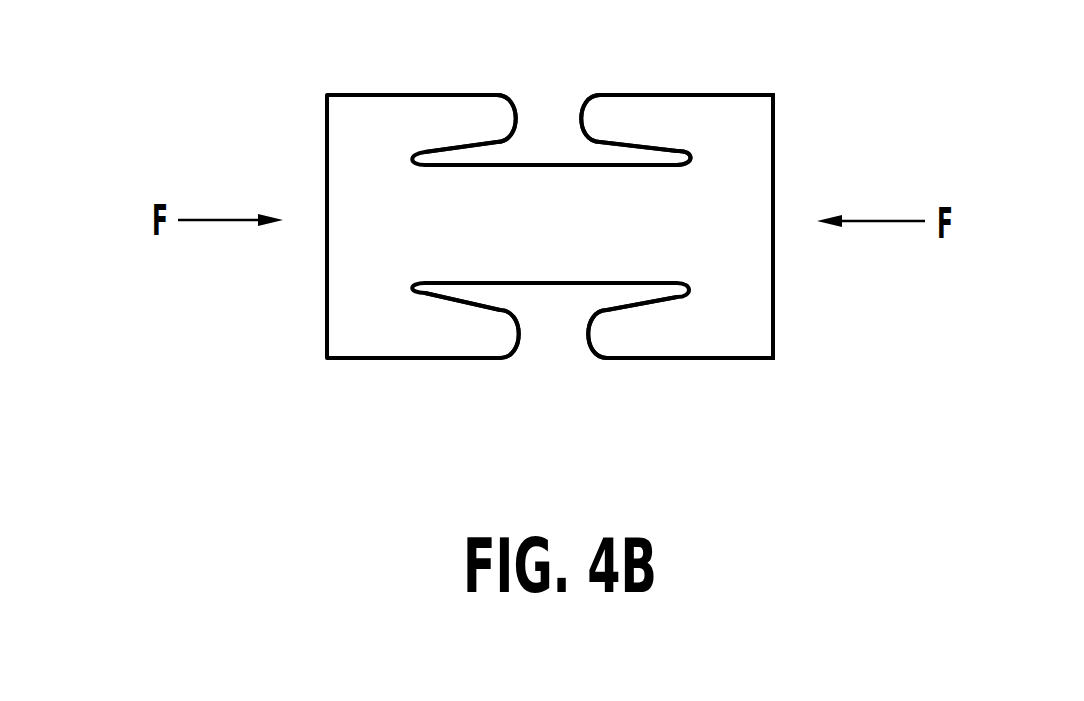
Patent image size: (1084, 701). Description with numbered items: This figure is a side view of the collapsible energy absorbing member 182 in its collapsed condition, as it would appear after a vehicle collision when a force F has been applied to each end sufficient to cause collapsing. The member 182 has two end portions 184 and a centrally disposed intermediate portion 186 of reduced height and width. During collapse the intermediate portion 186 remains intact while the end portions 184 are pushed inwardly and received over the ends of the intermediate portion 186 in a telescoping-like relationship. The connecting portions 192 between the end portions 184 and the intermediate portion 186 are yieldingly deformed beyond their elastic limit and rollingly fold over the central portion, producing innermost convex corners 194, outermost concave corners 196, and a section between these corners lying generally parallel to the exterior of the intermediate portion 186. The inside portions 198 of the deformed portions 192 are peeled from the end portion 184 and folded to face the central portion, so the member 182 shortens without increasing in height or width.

The collapsible energy absorbing member 182 is at (768, 430).
The end portions 184 is at (708, 123).
The intermediate portion 186 is at (538, 253).
The deformed portions 192 is at (465, 108).
The innermost convex corners 194 is at (518, 350).
The outermost concave corners 196 is at (683, 293).
The inside portions 198 is at (633, 148).